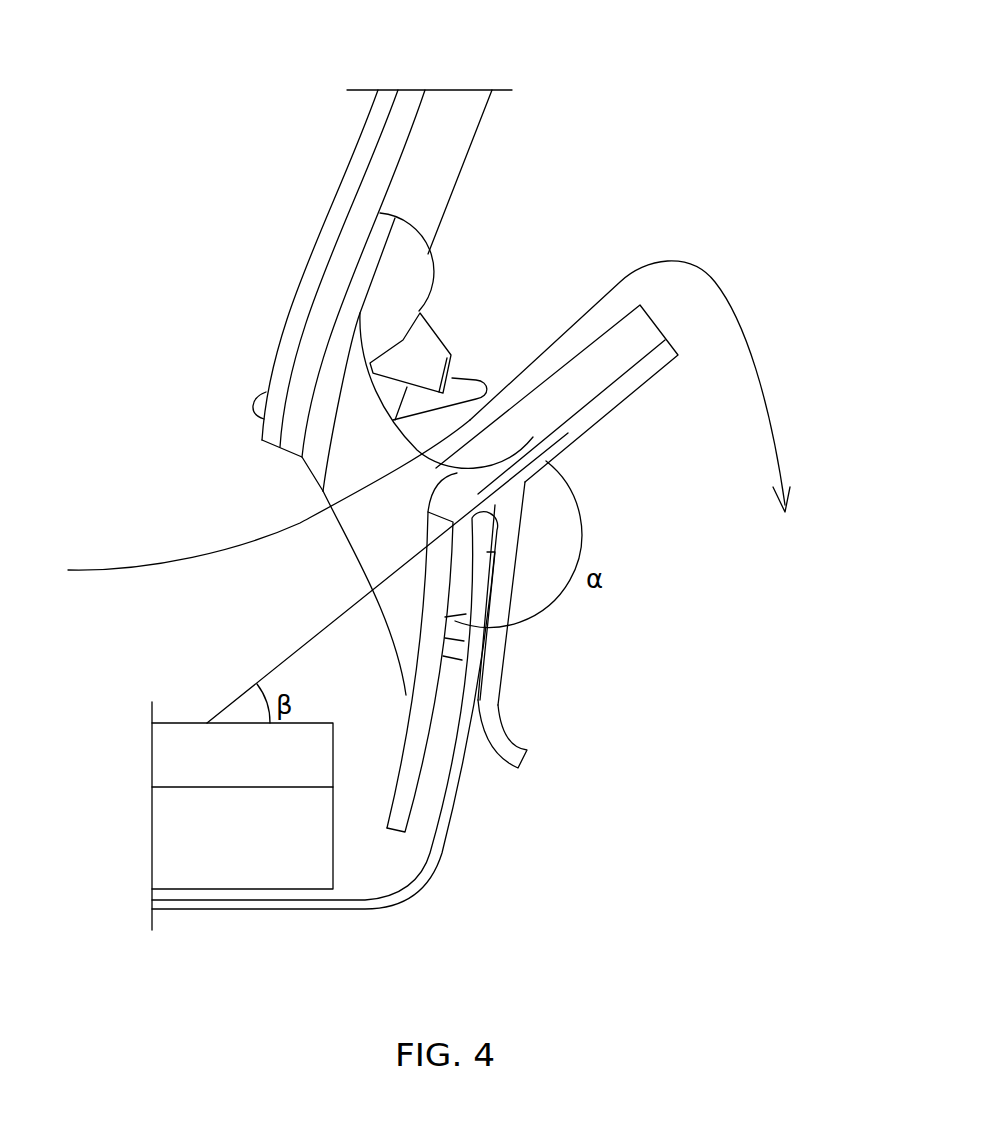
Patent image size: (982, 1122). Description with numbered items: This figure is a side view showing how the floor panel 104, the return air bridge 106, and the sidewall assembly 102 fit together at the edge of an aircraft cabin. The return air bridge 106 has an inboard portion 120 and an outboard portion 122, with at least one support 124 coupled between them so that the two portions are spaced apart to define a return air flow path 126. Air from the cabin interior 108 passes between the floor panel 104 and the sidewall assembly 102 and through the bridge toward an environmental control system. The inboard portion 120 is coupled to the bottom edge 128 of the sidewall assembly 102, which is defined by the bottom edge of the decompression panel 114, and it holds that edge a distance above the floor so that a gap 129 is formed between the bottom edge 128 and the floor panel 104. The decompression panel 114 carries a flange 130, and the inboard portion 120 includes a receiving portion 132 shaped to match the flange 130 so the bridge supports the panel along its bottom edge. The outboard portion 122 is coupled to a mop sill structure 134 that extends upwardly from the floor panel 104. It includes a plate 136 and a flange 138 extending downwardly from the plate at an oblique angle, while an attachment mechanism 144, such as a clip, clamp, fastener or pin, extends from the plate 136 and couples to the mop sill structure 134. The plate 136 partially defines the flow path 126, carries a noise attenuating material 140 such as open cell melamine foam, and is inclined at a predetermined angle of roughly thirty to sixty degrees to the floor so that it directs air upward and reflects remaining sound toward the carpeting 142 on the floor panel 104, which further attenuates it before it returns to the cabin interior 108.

The sidewall assembly 102 is at (530, 56).
The floor panel 104 is at (178, 840).
The return air bridge 106 is at (660, 688).
The cabin interior 108 is at (207, 237).
The decompression panel 114 is at (387, 143).
The inboard portion 120 is at (322, 373).
The outboard portion 122 is at (493, 723).
The support 124 is at (366, 546).
The return air flow path 126 is at (638, 407).
The bottom edge 128 is at (270, 447).
The gap 129 is at (247, 510).
The flange 130 is at (445, 165).
The receiving portion 132 is at (415, 287).
The mop sill structure 134 is at (436, 830).
The plate 136 is at (640, 373).
The flange 138 is at (413, 743).
The noise attenuating material 140 is at (565, 392).
The carpeting 142 is at (178, 756).
The attachment mechanism 144 is at (500, 650).